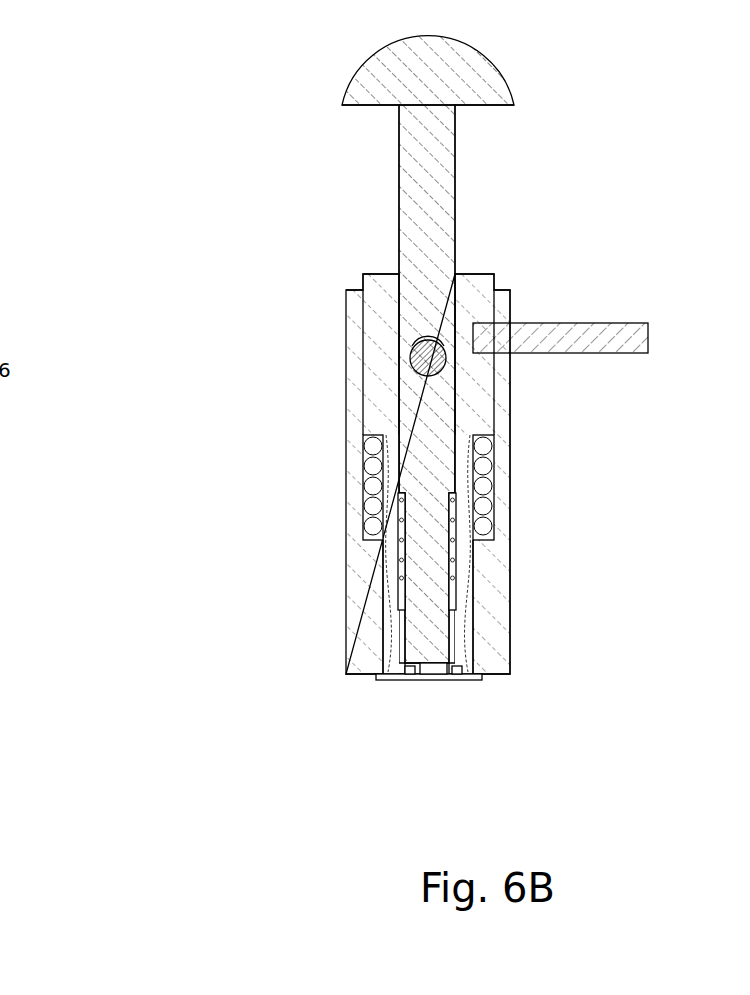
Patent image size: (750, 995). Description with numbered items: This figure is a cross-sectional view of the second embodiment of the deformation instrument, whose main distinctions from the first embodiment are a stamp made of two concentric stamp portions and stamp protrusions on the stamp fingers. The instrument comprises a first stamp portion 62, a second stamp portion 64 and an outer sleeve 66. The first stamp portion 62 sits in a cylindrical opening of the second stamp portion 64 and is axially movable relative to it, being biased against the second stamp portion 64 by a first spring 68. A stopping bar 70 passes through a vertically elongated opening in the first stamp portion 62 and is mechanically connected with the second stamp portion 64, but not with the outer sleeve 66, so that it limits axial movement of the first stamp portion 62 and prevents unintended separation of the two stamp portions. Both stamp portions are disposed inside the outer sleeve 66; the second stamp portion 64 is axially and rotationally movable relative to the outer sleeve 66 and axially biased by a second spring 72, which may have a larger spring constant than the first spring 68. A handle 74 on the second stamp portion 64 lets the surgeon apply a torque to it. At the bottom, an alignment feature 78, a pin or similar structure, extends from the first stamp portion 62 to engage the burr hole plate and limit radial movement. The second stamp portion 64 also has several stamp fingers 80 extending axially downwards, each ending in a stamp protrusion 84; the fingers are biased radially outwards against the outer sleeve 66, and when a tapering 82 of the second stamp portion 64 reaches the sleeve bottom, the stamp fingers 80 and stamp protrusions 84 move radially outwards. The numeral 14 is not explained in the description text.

The first stamp portion 62 is at (425, 205).
The second stamp portion 64 is at (483, 282).
The outer sleeve 66 is at (502, 442).
The first spring 68 is at (453, 566).
The stopping bar 70 is at (418, 352).
The second spring 72 is at (487, 498).
The handle 74 is at (522, 340).
The alignment feature 78 is at (397, 682).
The stamp fingers 80 is at (460, 652).
The tapering 82 is at (463, 682).
The stamp protrusions 84 is at (445, 683).
The substrate 14 is at (440, 683).